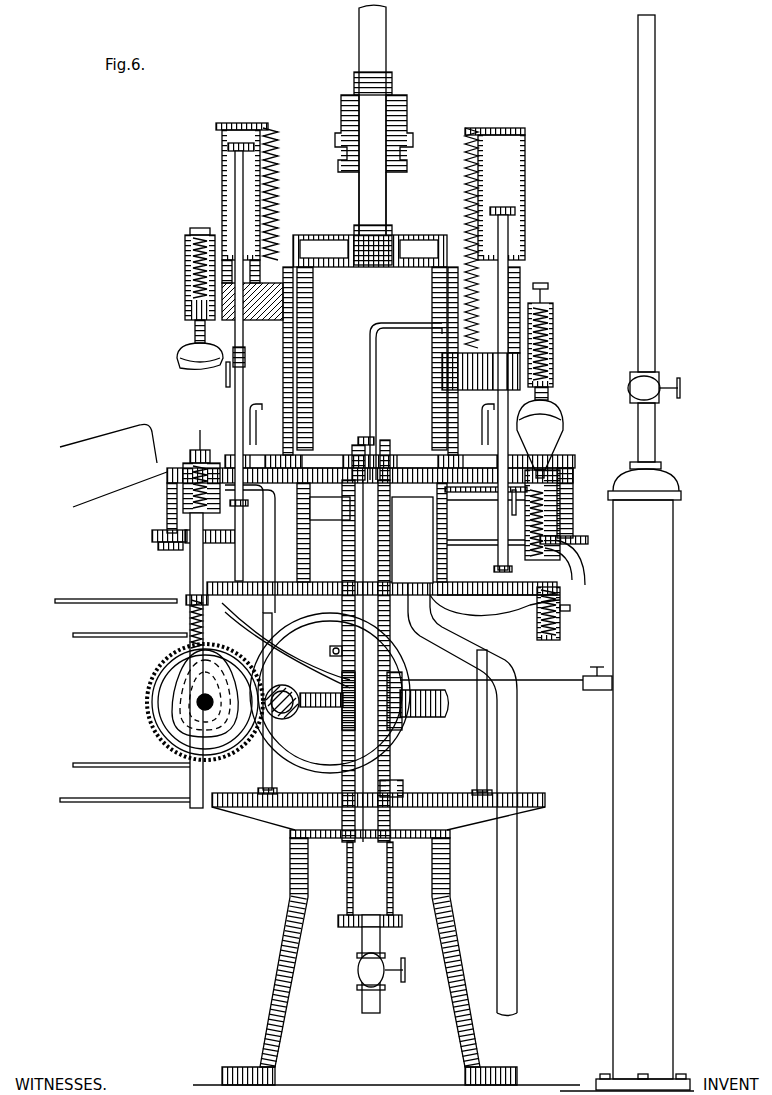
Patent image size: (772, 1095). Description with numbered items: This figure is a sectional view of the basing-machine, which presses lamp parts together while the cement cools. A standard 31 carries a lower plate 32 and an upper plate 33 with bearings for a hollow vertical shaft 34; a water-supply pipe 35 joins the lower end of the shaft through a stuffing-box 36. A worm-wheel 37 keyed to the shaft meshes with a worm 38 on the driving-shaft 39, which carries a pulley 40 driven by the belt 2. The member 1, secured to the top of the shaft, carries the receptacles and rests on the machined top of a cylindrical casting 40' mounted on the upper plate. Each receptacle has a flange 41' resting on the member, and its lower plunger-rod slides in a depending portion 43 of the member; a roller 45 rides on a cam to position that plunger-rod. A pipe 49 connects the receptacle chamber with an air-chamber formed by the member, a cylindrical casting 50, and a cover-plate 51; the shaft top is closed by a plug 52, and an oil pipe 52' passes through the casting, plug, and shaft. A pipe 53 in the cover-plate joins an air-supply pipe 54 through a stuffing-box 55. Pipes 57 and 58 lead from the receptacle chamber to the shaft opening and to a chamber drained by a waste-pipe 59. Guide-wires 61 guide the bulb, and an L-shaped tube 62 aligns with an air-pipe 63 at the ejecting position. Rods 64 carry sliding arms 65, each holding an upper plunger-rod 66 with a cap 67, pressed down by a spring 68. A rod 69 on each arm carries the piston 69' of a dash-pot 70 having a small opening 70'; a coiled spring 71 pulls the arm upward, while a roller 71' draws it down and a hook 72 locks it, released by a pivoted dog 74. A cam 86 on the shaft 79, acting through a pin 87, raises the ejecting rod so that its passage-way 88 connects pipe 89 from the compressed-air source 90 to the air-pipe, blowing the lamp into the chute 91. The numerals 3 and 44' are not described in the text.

The member 1 is at (167, 509).
The belt 2 is at (90, 600).
The rim 3 is at (152, 537).
The standard 31 is at (290, 868).
The lower plate 32 is at (247, 812).
The upper plate 33 is at (505, 605).
The hollow vertical shaft 34 is at (390, 752).
The water-supply pipe 35 is at (362, 945).
The stuffing-box 36 is at (400, 800).
The worm-wheel 37 is at (445, 725).
The worm 38 is at (285, 720).
The driving-shaft 39 is at (310, 710).
The pulley 40 is at (330, 700).
The cylindrical casting 40' is at (382, 539).
The flange 41' is at (382, 492).
The depending portion 43 is at (582, 570).
The valve 44' is at (565, 613).
The roller 45 is at (214, 542).
The pipe 49 is at (522, 520).
The cylindrical casting 50 is at (313, 372).
The cover-plate 51 is at (350, 268).
The plug 52 is at (369, 441).
The pipe 52' is at (406, 401).
The pipe 53 is at (382, 205).
The air-supply pipe 54 is at (378, 52).
The stuffing-box 55 is at (410, 115).
The pipe 57 is at (330, 508).
The pipe 58 is at (418, 500).
The waste-pipe 59 is at (519, 877).
The guide-wires 61 is at (217, 462).
The L-shaped tube 62 is at (258, 425).
The air-pipe 63 is at (276, 514).
The rods 64 is at (293, 335).
The arm 65 is at (480, 353).
The upper plunger-rod 66 is at (195, 330).
The cap 67 is at (180, 355).
The spring 68 is at (185, 277).
The rod 69 is at (380, 366).
The piston 69' is at (362, 180).
The dash-pot 70 is at (373, 195).
The opening 70' is at (376, 136).
The coiled spring 71 is at (370, 238).
The roller 71' is at (505, 525).
The hook 72 is at (230, 376).
The pivoted dog 74 is at (512, 500).
The shaft 79 is at (197, 704).
The cam 86 is at (172, 684).
The pin 87 is at (165, 660).
The passage-way 88 is at (190, 616).
The pipe 89 is at (286, 645).
The source of compressed air 90 is at (675, 745).
The chute 91 is at (113, 465).